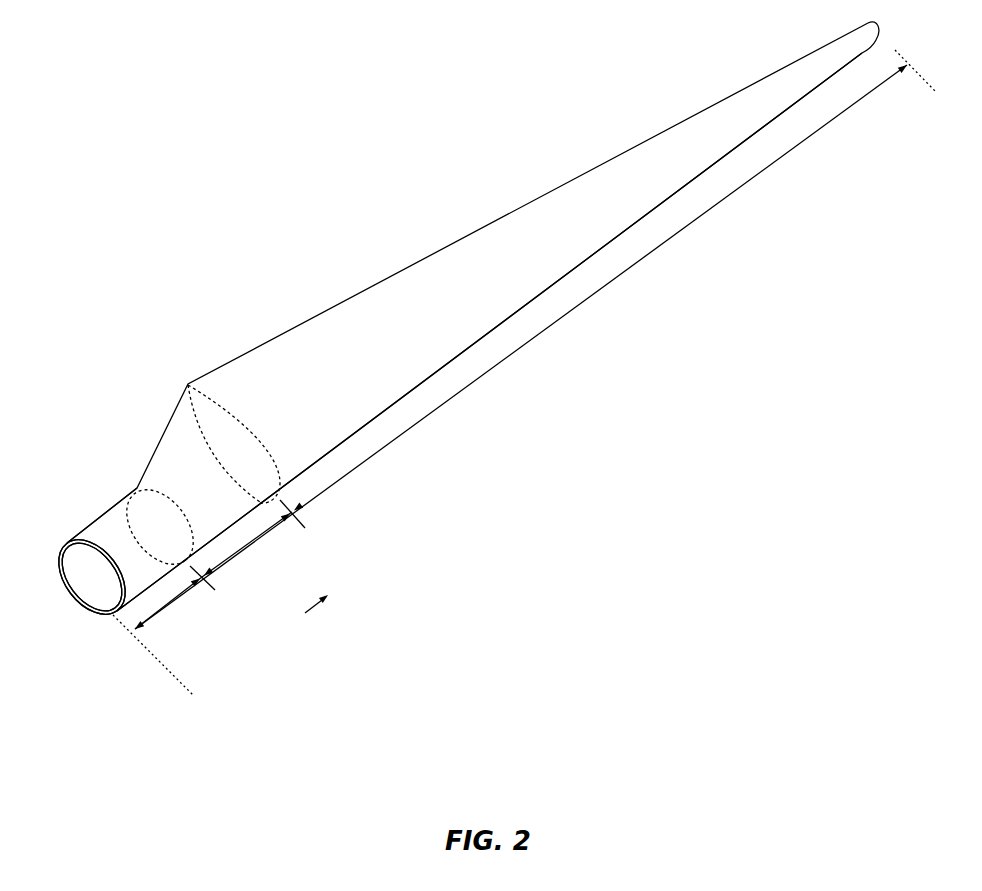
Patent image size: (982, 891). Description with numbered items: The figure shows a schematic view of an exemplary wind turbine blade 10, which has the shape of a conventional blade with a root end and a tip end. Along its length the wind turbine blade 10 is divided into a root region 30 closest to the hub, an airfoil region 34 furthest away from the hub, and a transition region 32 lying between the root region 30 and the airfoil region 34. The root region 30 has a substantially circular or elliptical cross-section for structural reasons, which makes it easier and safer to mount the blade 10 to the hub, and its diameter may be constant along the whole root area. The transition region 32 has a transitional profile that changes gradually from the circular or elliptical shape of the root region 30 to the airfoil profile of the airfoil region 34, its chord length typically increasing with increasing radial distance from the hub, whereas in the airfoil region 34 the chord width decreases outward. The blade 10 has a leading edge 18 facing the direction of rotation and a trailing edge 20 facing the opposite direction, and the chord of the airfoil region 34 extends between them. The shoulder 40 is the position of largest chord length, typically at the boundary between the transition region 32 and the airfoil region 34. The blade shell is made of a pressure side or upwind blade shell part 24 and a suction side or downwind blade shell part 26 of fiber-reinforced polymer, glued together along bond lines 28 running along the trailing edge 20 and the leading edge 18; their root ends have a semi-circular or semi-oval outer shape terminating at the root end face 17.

The wind turbine blade 10 is at (320, 208).
The trailing edge 20 is at (520, 206).
The leading edge 18 is at (632, 228).
The shoulder 40 is at (188, 384).
The pressure side blade shell part 24 is at (86, 533).
The root end face 17 is at (78, 566).
The bond lines 28 is at (74, 538).
The suction side blade shell part 26 is at (107, 611).
The airfoil region 34 is at (540, 332).
The root region 30 is at (172, 600).
The transition region 32 is at (252, 542).